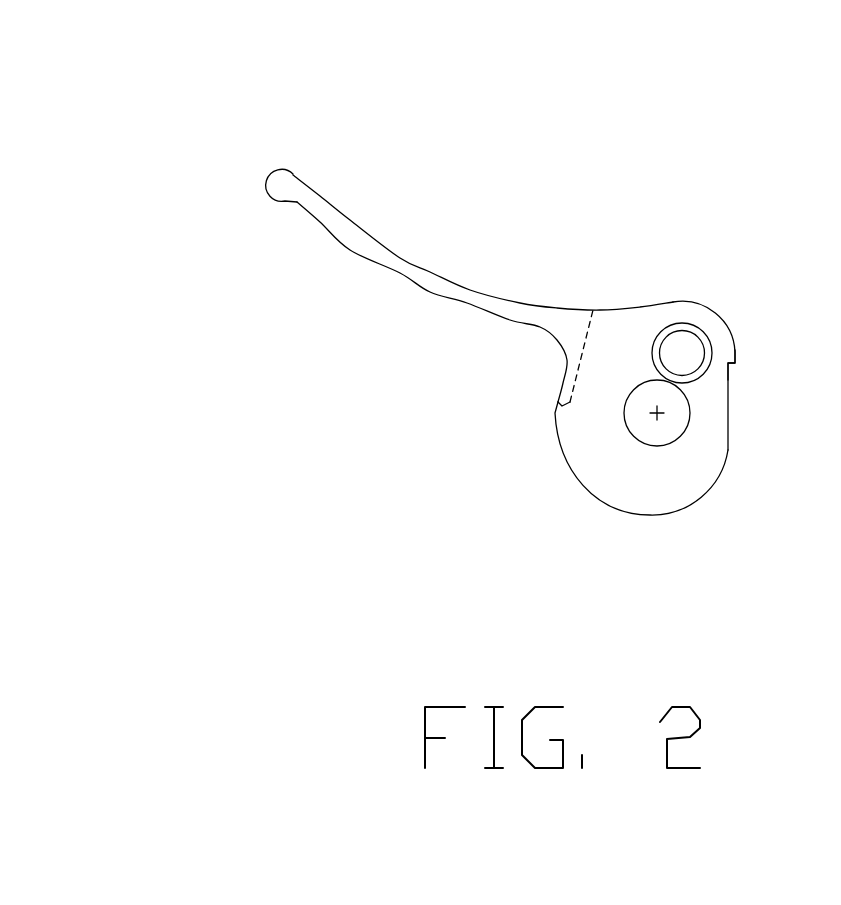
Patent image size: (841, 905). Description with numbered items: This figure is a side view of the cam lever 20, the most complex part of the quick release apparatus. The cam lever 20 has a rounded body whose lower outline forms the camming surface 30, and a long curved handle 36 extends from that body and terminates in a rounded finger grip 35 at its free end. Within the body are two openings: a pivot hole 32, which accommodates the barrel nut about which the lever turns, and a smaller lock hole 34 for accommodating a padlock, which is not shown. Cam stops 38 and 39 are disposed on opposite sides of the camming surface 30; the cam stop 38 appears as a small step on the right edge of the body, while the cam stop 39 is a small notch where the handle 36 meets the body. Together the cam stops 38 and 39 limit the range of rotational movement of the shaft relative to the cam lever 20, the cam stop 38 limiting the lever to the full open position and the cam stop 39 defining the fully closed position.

The cam lever 20 is at (670, 300).
The camming surface 30 is at (710, 495).
The pivot hole 32 is at (648, 447).
The lock hole 34 is at (702, 343).
The finger grip 35 is at (265, 173).
The handle 36 is at (466, 290).
The cam stop 38 is at (737, 363).
The cam stop 39 is at (558, 402).